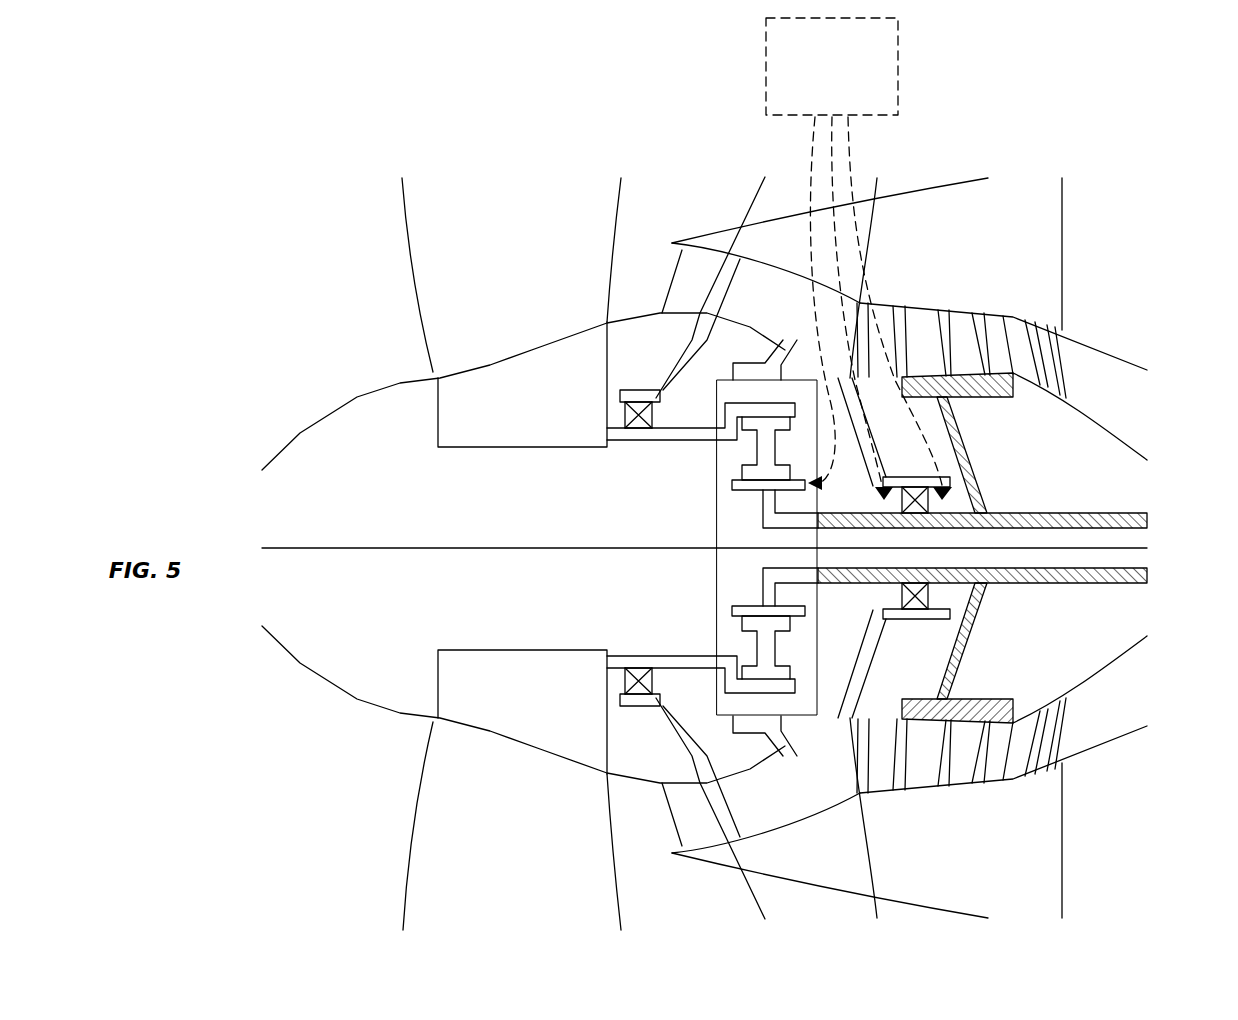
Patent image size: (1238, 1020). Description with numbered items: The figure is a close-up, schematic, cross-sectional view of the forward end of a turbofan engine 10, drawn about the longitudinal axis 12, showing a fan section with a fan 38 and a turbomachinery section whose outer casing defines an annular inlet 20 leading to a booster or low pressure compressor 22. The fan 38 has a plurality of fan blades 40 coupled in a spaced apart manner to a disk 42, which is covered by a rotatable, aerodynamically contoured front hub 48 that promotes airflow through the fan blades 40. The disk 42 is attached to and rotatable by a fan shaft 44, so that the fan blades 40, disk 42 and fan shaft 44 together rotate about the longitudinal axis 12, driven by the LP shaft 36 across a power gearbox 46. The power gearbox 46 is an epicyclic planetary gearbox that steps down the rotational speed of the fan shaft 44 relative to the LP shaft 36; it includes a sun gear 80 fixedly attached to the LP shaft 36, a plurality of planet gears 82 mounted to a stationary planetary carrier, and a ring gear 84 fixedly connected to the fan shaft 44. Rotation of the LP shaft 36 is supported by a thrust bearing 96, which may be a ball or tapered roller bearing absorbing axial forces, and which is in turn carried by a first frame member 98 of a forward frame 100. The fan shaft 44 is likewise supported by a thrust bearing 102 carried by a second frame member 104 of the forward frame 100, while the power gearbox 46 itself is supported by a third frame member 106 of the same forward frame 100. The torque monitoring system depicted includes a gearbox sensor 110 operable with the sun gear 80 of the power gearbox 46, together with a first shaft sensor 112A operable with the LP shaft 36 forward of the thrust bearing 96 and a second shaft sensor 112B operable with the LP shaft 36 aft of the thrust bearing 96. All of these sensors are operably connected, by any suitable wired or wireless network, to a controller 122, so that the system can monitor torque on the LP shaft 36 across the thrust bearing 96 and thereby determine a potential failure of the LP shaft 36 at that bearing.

The turbofan engine 10 is at (1045, 85).
The longitudinal axis 12 is at (383, 546).
The annular inlet 20 is at (652, 248).
The low pressure compressor 22 is at (1042, 268).
The LP shaft 36 is at (1093, 513).
The fan 38 is at (345, 255).
The fan blades 40 is at (427, 300).
The disk 42 is at (453, 685).
The fan shaft 44 is at (672, 655).
The power gearbox 46 is at (860, 827).
The front hub 48 is at (298, 433).
The sun gear 80 is at (760, 499).
The planet gears 82 is at (753, 446).
The ring gear 84 is at (748, 687).
The thrust bearing 96 is at (928, 597).
The first frame member 98 is at (867, 657).
The forward frame 100 is at (773, 805).
The thrust bearing 102 is at (608, 676).
The second frame member 104 is at (687, 738).
The third frame member 106 is at (743, 777).
The gearbox sensor 110 is at (807, 455).
The first shaft sensor 112A is at (905, 470).
The second shaft sensor 112B is at (970, 486).
The controller 122 is at (816, 84).